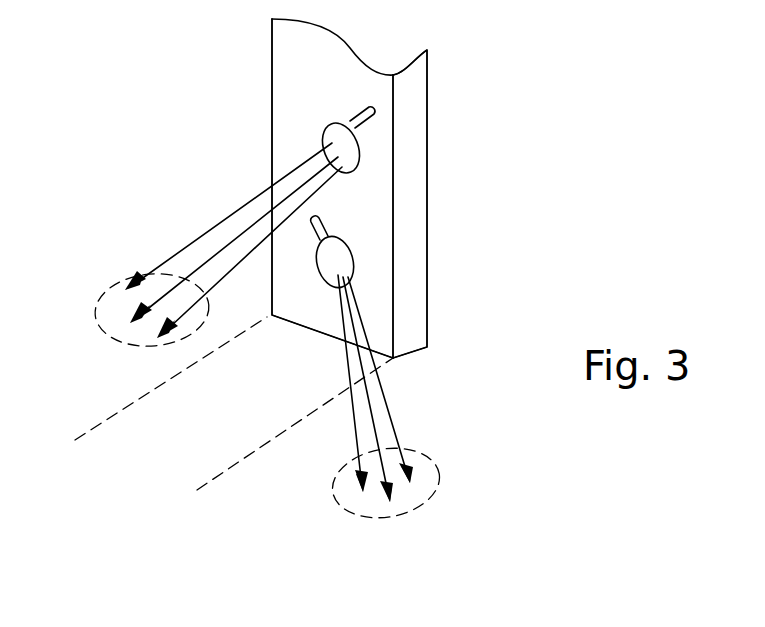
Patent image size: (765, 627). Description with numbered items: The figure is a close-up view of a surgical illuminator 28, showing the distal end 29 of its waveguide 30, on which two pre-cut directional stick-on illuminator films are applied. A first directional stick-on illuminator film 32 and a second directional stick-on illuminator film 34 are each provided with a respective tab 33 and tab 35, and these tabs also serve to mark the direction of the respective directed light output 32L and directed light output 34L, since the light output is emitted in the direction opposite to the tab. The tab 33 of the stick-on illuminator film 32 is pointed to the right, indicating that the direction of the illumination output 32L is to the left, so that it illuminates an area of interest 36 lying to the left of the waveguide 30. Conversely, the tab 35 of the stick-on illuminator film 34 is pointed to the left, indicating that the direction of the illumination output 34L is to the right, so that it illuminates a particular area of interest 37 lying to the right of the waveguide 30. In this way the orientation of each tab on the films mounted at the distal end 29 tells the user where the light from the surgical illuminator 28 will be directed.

The surgical illuminator 28 is at (233, 128).
The distal end 29 is at (412, 183).
The waveguide 30 is at (438, 100).
The directional stick-on illuminator film 32 is at (332, 128).
The tab 33 is at (372, 124).
The directional stick-on illuminator film 34 is at (342, 262).
The tab 35 is at (323, 222).
The directed light output 32L is at (235, 238).
The directed light output 34L is at (372, 413).
The area of interest 36 is at (123, 285).
The area of interest 37 is at (433, 485).